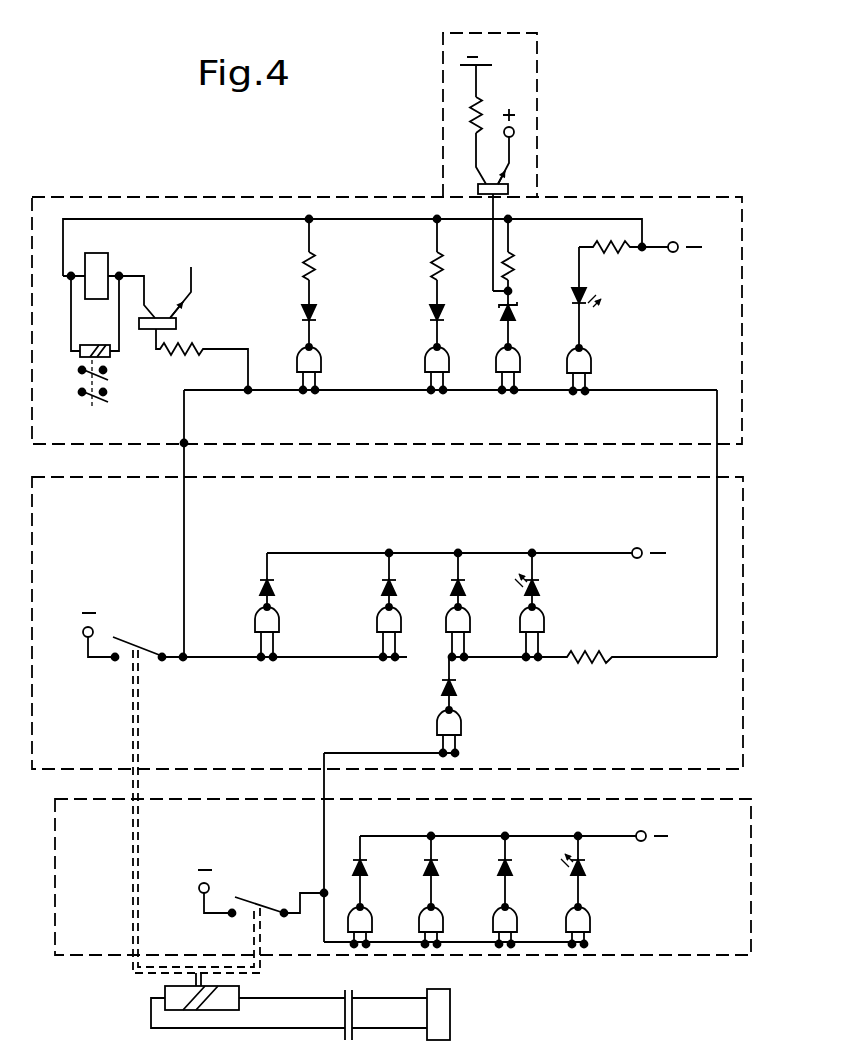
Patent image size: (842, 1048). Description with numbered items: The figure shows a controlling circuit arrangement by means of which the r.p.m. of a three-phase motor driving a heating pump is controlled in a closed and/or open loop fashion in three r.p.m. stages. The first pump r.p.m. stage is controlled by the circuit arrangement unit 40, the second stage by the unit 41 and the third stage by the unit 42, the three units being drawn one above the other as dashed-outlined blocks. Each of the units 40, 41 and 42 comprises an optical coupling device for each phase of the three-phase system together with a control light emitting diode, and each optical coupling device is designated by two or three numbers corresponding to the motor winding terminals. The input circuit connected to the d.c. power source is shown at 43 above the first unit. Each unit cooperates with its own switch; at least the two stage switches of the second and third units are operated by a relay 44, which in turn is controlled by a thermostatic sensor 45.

The circuit arrangement unit 40 is at (689, 194).
The circuit arrangement unit 41 is at (750, 524).
The circuit arrangement unit 42 is at (759, 872).
The input circuit 43 is at (543, 102).
The relay 44 is at (165, 996).
The thermostatic sensor 45 is at (438, 1022).